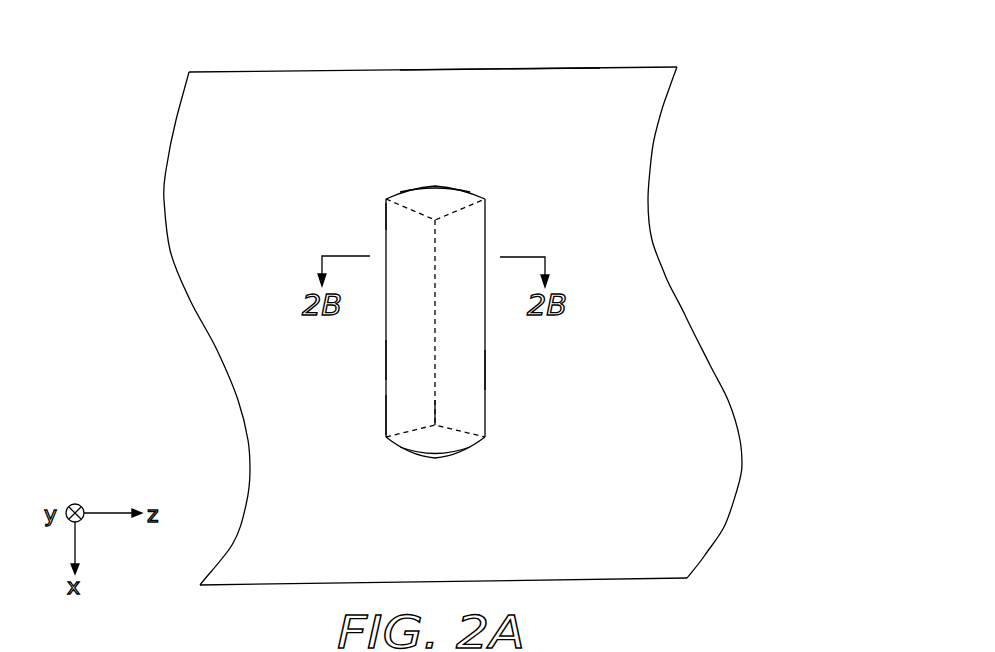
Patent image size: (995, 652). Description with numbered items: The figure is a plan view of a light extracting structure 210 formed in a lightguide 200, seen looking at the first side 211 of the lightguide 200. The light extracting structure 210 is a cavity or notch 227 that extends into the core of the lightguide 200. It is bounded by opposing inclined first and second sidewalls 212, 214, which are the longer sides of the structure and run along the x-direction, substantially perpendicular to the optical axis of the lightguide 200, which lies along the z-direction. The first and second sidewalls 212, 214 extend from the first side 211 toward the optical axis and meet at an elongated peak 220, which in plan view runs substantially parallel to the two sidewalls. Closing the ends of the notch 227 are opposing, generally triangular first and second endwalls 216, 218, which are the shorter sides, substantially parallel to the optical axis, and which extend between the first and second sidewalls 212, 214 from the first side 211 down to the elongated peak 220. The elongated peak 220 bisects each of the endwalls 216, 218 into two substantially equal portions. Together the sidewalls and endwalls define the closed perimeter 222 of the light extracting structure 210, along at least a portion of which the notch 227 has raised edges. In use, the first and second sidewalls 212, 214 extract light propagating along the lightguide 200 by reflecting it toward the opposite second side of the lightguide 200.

The lightguide 200 is at (630, 168).
The light extracting structure 210 is at (385, 176).
The first side of the lightguide 211 is at (595, 90).
The first sidewall 212 is at (400, 363).
The second sidewall 214 is at (465, 370).
The first endwall 216 is at (437, 195).
The second endwall 218 is at (440, 450).
The elongated peak 220 is at (437, 402).
The closed perimeter 222 is at (386, 213).
The notch 227 is at (400, 398).